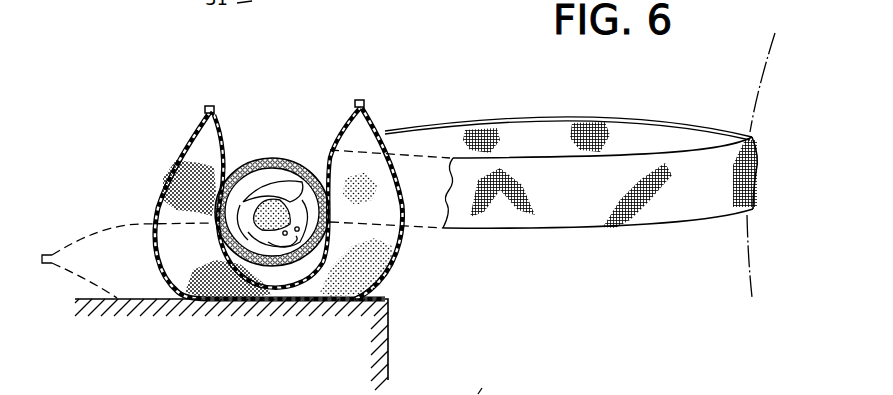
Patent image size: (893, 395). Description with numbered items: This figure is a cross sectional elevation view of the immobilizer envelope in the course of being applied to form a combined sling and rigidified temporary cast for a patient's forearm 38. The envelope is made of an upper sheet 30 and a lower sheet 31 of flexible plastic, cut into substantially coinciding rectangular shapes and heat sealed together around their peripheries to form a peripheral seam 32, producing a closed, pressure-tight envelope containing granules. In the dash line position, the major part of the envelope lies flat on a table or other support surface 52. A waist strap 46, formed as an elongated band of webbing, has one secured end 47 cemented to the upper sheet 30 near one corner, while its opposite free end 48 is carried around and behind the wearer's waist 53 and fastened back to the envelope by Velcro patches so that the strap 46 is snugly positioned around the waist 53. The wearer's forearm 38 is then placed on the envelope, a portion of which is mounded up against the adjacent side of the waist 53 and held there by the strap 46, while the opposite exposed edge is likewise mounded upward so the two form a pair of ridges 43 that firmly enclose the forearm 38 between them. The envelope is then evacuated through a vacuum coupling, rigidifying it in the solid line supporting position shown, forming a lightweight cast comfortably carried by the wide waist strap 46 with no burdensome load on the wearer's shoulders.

The upper sheet 30 is at (226, 132).
The lower sheet 31 is at (163, 190).
The peripheral seam 32 is at (205, 110).
The forearm 38 is at (274, 165).
The ridges 43 is at (200, 153).
The waist strap 46 is at (573, 218).
The secured end 47 is at (316, 158).
The free end 48 is at (392, 128).
The support surface 52 is at (390, 303).
The waist 53 is at (770, 106).